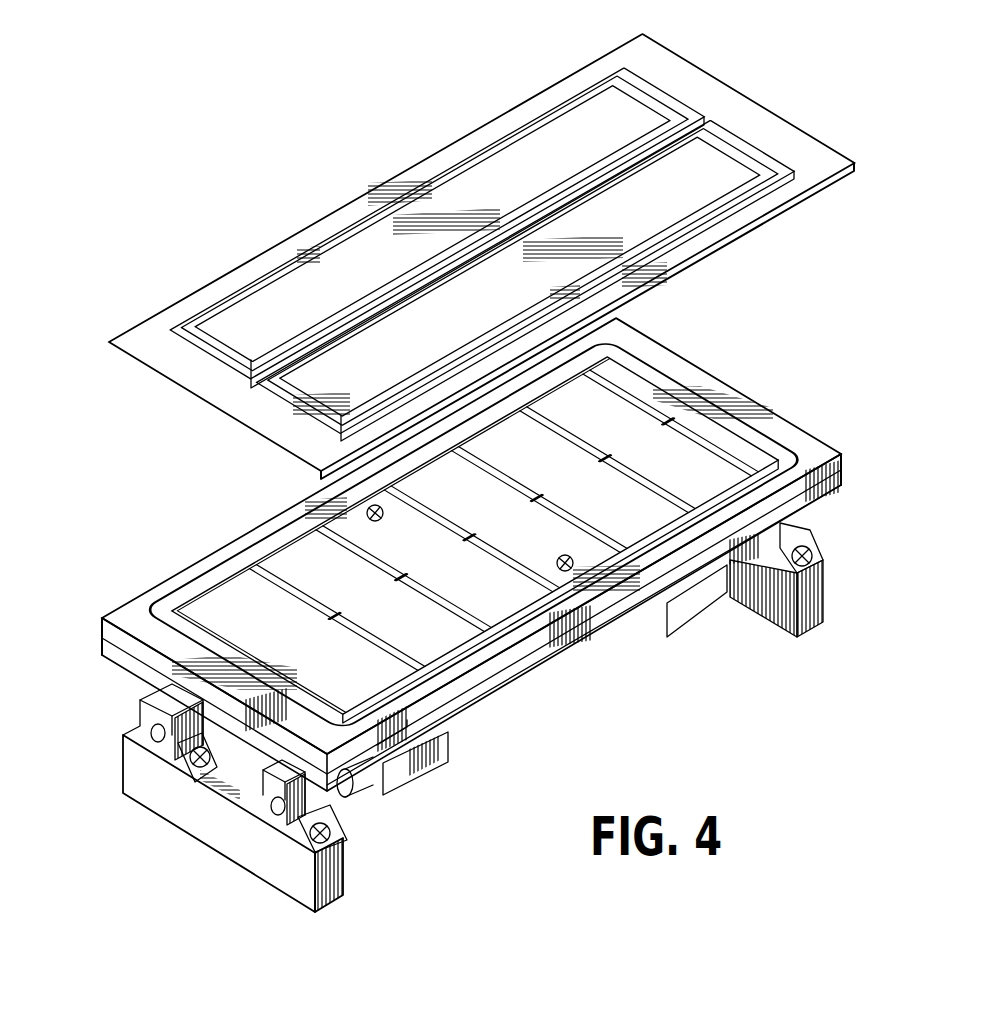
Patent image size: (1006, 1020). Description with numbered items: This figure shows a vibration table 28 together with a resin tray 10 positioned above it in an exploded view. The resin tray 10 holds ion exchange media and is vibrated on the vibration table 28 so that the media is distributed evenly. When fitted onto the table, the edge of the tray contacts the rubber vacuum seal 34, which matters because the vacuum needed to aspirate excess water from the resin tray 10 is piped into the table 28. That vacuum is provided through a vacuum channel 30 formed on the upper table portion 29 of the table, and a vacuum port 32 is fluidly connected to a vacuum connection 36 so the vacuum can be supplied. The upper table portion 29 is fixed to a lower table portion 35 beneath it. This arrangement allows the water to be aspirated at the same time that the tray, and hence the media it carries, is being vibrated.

The resin tray 10 is at (353, 207).
The vibration table 28 is at (880, 497).
The upper table portion 29 is at (598, 608).
The vacuum channel 30 is at (337, 528).
The vacuum port 32 is at (270, 657).
The rubber vacuum seal 34 is at (789, 456).
The lower table portion 35 is at (500, 680).
The vacuum connection 36 is at (175, 684).